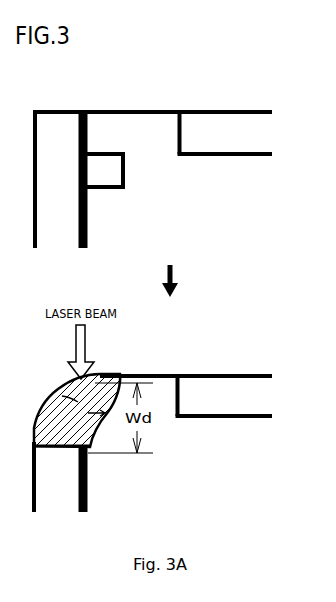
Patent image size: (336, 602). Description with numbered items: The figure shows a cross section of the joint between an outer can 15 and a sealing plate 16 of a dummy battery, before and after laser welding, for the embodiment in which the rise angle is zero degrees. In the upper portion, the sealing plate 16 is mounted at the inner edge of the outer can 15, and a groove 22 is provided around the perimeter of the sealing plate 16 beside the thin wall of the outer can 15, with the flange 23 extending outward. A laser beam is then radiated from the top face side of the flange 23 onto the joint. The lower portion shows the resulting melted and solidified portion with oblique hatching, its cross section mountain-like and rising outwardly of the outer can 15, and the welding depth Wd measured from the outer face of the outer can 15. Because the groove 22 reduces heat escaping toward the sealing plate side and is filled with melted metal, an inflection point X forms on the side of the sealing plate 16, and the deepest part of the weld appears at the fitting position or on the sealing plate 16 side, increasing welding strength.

The outer can 15 is at (67, 242).
The sealing plate 16 is at (109, 242).
The groove 22 is at (107, 168).
The flange 23 is at (130, 118).
The inflection point X is at (63, 392).